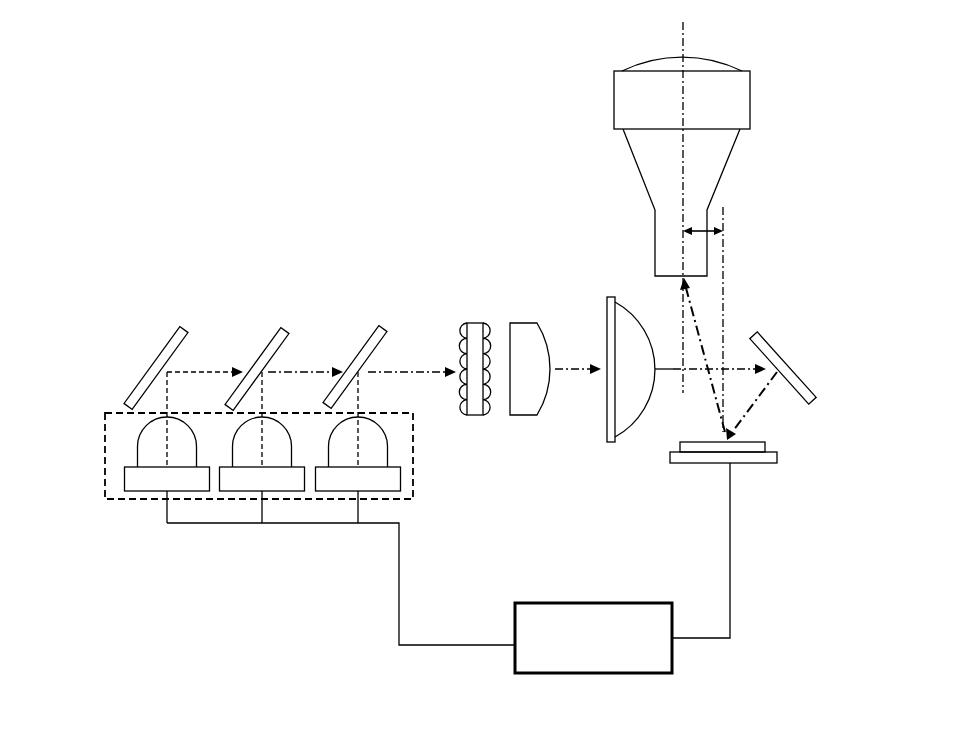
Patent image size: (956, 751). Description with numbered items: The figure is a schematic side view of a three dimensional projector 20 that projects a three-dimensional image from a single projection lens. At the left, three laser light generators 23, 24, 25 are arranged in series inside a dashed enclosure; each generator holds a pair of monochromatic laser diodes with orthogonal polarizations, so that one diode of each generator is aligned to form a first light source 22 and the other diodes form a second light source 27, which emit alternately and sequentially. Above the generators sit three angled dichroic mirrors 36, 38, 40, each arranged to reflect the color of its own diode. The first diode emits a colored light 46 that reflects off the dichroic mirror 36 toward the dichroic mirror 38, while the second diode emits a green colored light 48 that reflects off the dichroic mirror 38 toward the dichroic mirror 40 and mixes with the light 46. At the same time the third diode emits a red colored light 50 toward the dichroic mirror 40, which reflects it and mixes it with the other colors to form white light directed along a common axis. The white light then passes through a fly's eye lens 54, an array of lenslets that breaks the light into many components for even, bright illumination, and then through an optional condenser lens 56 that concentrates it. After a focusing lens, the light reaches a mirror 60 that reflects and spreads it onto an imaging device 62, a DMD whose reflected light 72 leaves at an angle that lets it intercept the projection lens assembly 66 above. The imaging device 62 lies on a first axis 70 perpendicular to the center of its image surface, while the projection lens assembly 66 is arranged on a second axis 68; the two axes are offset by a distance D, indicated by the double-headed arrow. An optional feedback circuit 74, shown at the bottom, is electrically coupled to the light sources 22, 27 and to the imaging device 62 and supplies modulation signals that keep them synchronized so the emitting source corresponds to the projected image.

The three dimensional projector 20 is at (181, 150).
The first light source 22 is at (216, 503).
The second light source 27 is at (110, 503).
The laser light generator 23 is at (124, 477).
The laser light generator 24 is at (254, 485).
The laser light generator 25 is at (395, 483).
The dichroic mirror 36 is at (168, 347).
The dichroic mirror 38 is at (275, 333).
The dichroic mirror 40 is at (364, 343).
The colored light 46 is at (166, 443).
The green colored light 48 is at (262, 443).
The red colored light 50 is at (358, 445).
The fly's eye lens 54 is at (468, 323).
The condenser lens 56 is at (523, 323).
The mirror 60 is at (767, 337).
The imaging device 62 is at (750, 463).
The projection lens assembly 66 is at (750, 98).
The second axis 68 is at (682, 162).
The first axis 70 is at (723, 273).
The light 72 is at (712, 380).
The feedback circuit 74 is at (602, 673).
The distance D is at (697, 227).